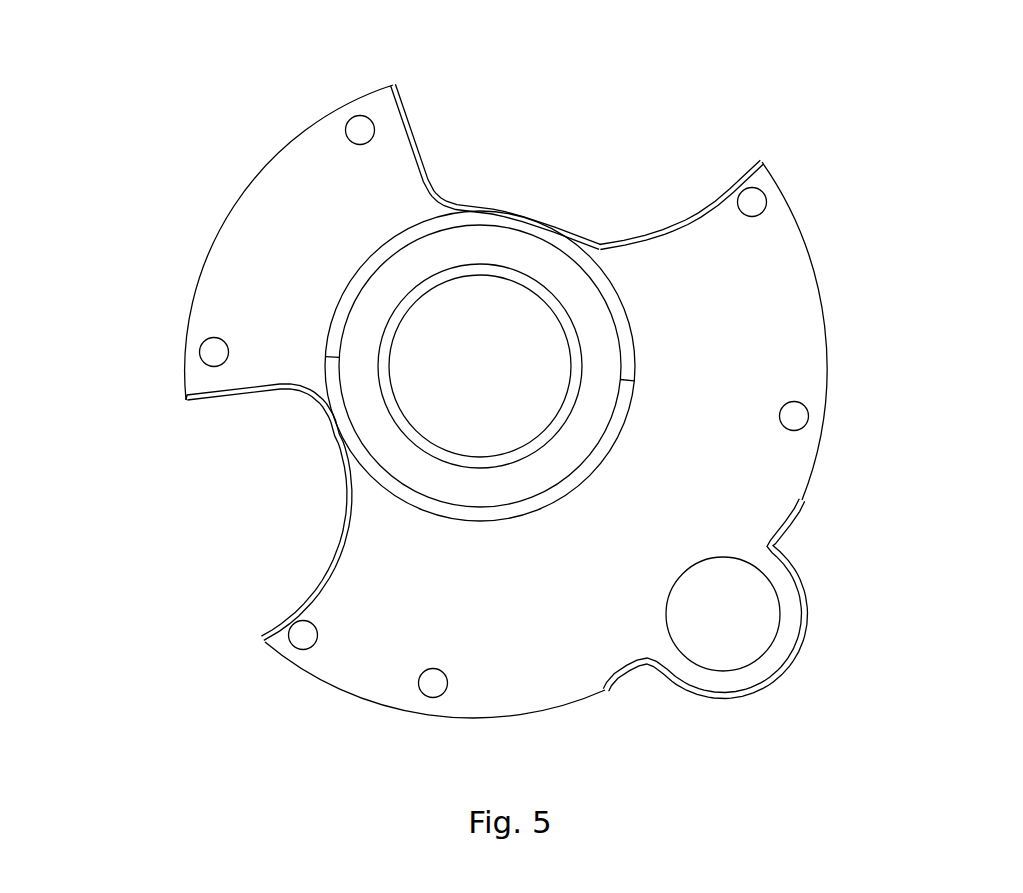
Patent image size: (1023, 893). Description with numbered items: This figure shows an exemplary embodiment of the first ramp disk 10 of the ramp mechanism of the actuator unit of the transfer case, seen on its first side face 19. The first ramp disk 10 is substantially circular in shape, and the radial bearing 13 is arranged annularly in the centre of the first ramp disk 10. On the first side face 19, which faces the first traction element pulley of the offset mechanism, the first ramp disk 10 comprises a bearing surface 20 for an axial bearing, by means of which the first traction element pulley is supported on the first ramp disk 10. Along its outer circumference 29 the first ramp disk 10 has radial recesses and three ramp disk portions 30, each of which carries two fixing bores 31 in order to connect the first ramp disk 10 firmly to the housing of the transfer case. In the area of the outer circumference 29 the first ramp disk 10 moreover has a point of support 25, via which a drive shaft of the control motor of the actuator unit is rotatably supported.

The first ramp disk 10 is at (526, 406).
The radial bearing 13 is at (570, 350).
The first side face 19 is at (466, 362).
The bearing surface 20 is at (590, 425).
The point of support 25 is at (728, 671).
The outer circumference 29 is at (803, 238).
The ramp disk portions 30 is at (392, 182).
The fixing bores 31 is at (214, 352).